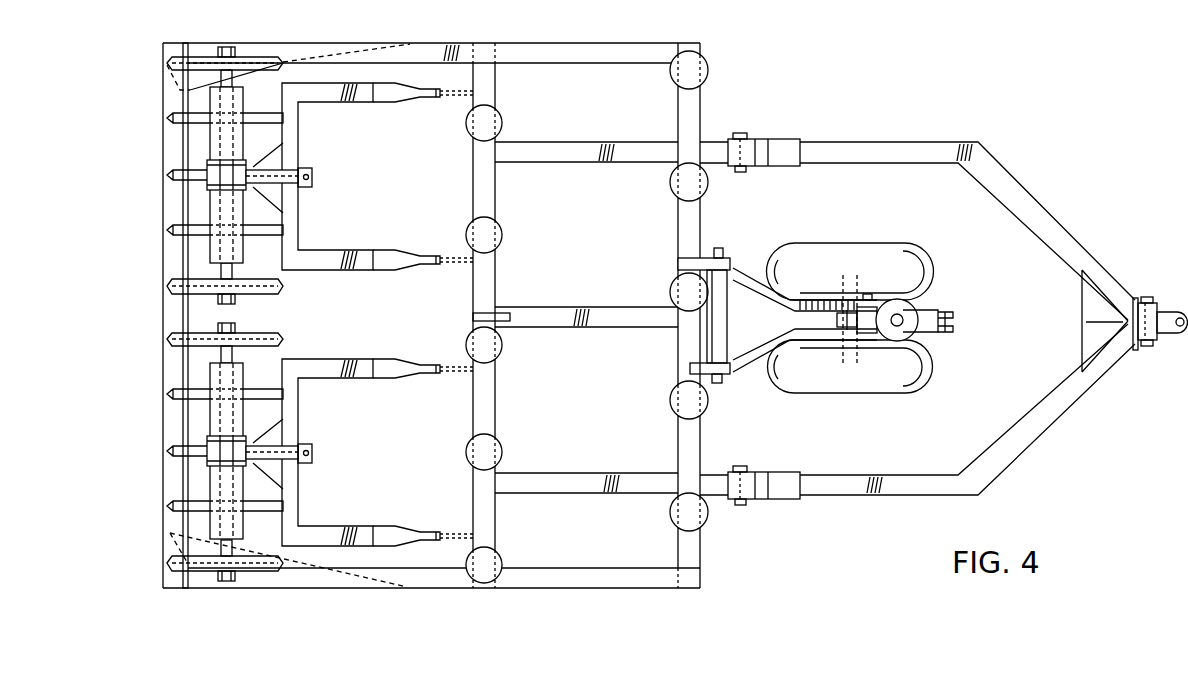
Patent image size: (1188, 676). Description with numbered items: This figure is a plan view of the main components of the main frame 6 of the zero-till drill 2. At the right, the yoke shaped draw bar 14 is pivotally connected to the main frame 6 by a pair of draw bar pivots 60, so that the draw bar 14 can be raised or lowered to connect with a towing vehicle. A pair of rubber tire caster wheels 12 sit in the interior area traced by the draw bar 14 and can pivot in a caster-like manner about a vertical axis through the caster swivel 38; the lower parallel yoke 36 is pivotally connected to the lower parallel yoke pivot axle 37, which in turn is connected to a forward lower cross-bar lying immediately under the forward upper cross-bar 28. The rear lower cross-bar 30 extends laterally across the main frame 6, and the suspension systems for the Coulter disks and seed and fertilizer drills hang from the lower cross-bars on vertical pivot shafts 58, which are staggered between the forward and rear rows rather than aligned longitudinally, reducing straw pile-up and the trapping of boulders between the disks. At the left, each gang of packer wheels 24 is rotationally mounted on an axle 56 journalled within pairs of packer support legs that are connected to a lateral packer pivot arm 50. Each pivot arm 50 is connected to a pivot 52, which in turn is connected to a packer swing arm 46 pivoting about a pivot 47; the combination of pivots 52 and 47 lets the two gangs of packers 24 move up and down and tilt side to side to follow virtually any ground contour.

The zero-till drill 2 is at (120, 395).
The main frame 6 is at (686, 589).
The rubber tire caster wheels 12 is at (870, 248).
The draw bar 14 is at (888, 496).
The packer wheels 24 is at (200, 280).
The forward upper cross-bar 28 is at (680, 435).
The rear lower cross-bar 30 is at (490, 405).
The lower parallel yoke 36 is at (775, 352).
The lower parallel yoke pivot axle 37 is at (730, 262).
The caster swivel 38 is at (925, 330).
The packer swing arms 46 is at (352, 271).
The pivots 47 is at (428, 251).
The lateral packer pivot arm 50 is at (210, 150).
The pivots 52 is at (265, 172).
The axle 56 is at (183, 350).
The vertical pivot shafts 58 is at (668, 182).
The draw bar pivots 60 is at (745, 135).